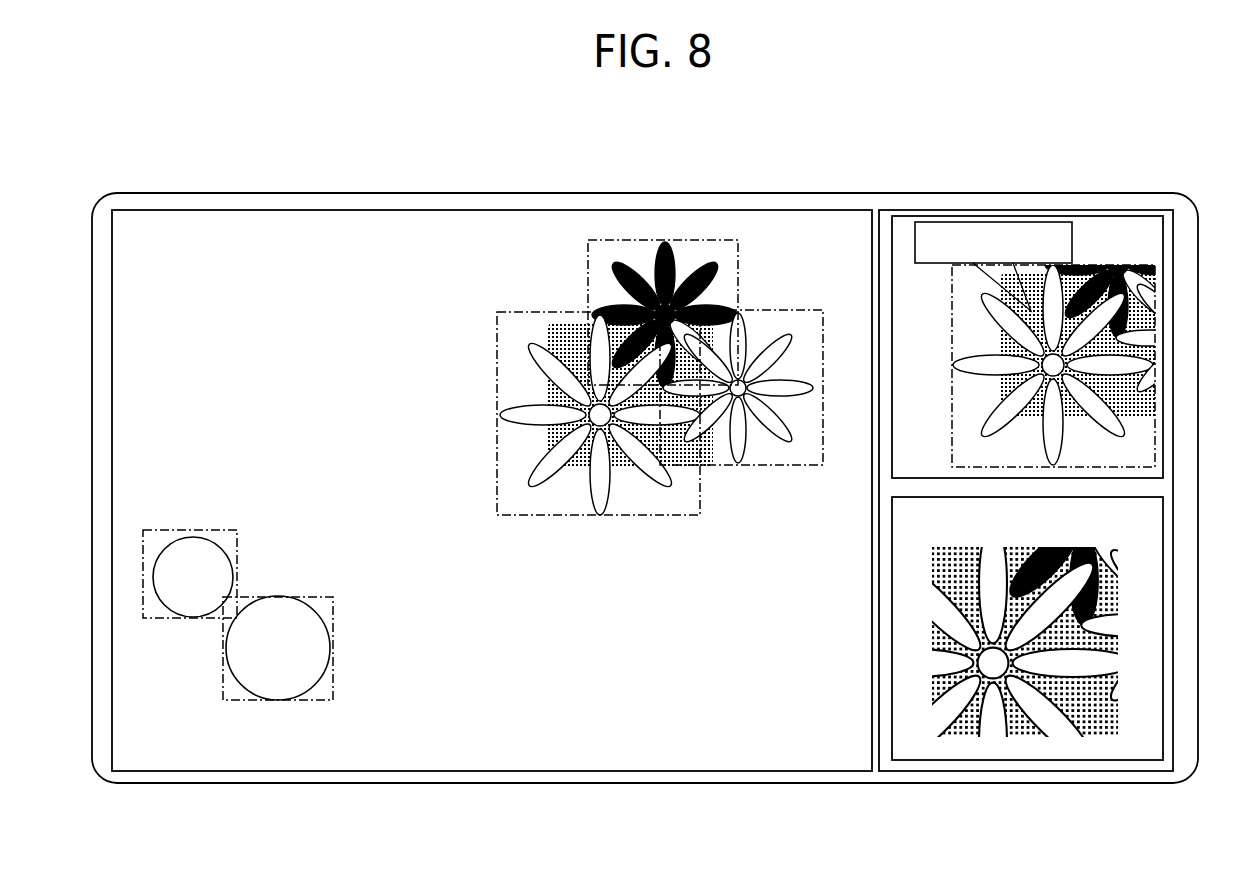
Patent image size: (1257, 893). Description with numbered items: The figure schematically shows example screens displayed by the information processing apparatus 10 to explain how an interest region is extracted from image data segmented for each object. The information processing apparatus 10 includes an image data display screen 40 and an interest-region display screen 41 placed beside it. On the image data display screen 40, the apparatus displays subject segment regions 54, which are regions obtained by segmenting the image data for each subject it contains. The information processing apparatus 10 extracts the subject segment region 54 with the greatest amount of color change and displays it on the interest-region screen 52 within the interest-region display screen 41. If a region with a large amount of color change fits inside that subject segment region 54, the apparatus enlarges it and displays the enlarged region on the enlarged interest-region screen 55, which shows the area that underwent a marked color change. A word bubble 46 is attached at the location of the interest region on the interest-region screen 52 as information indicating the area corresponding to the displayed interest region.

The information processing apparatus 10 is at (133, 192).
The image data display screen 40 is at (195, 210).
The interest-region display screen 41 is at (1053, 210).
The word bubble 46 is at (1074, 310).
The interest-region screen 52 is at (1160, 268).
The subject segment region 54 is at (508, 313).
The enlarged interest-region screen 55 is at (1163, 515).